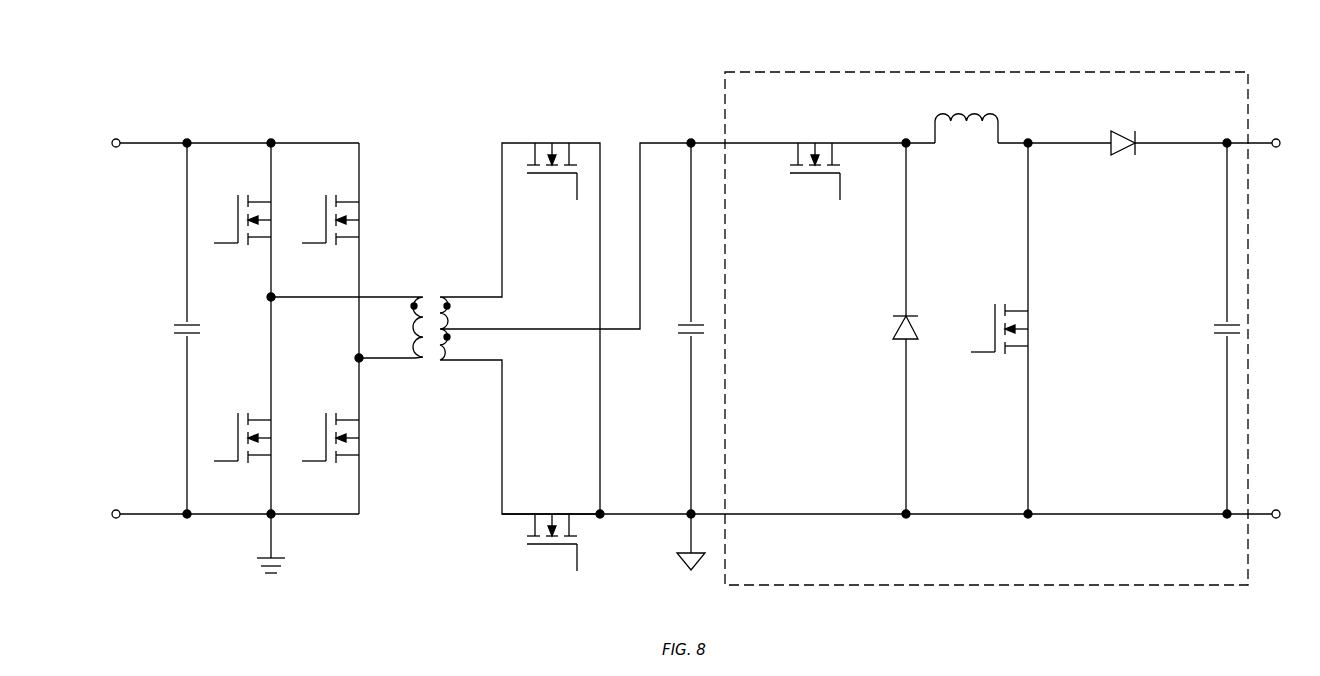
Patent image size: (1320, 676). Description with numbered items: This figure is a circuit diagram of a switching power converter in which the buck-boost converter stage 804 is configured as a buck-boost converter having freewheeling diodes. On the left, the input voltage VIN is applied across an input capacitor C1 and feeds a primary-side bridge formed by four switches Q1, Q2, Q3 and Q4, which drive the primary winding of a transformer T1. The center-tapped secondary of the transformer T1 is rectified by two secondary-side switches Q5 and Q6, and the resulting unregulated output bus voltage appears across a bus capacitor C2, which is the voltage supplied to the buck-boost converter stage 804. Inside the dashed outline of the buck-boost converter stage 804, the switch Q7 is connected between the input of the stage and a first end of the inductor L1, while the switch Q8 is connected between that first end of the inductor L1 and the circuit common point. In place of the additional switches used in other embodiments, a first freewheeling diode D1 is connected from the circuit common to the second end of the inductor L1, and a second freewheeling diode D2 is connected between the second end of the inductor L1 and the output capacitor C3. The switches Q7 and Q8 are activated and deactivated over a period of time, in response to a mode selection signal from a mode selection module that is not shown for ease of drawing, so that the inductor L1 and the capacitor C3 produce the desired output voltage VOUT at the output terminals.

The switch Q1 is at (241, 220).
The switch Q2 is at (241, 438).
The switch Q3 is at (329, 220).
The switch Q4 is at (329, 438).
The switch Q5 is at (552, 542).
The switch Q6 is at (552, 171).
The switch Q7 is at (815, 171).
The switch Q8 is at (997, 329).
The capacitor C1 is at (200, 331).
The capacitor C2 is at (678, 331).
The capacitor C3 is at (1213, 331).
The freewheeling diode D1 is at (893, 328).
The freewheeling diode D2 is at (1123, 132).
The inductor L1 is at (966, 116).
The transformer T1 is at (430, 317).
The input voltage VIN is at (140, 331).
The output voltage VOUT is at (1286, 331).
The buck-boost converter stage 804 is at (1181, 56).